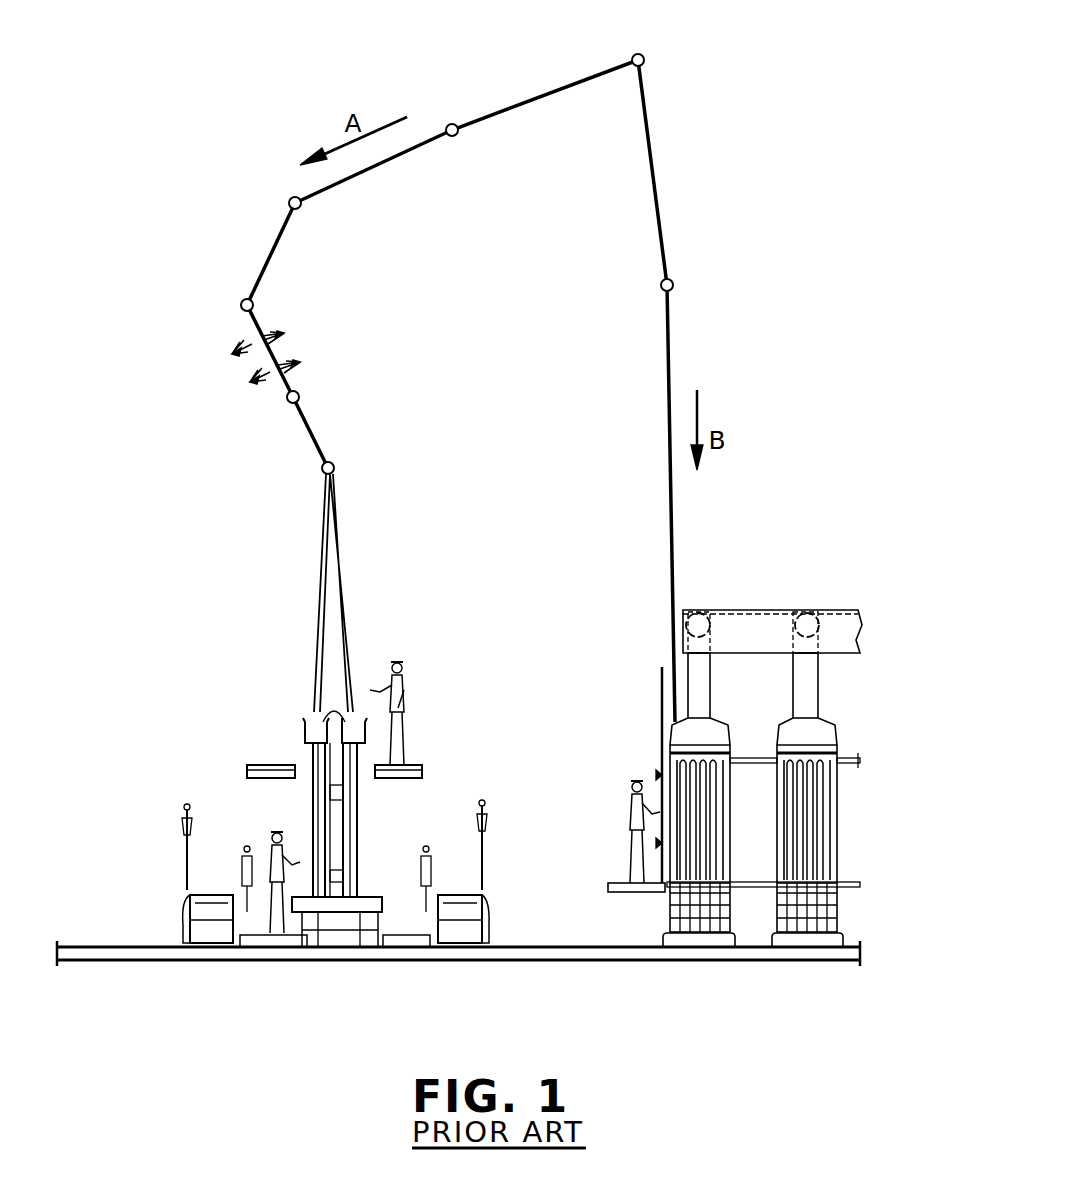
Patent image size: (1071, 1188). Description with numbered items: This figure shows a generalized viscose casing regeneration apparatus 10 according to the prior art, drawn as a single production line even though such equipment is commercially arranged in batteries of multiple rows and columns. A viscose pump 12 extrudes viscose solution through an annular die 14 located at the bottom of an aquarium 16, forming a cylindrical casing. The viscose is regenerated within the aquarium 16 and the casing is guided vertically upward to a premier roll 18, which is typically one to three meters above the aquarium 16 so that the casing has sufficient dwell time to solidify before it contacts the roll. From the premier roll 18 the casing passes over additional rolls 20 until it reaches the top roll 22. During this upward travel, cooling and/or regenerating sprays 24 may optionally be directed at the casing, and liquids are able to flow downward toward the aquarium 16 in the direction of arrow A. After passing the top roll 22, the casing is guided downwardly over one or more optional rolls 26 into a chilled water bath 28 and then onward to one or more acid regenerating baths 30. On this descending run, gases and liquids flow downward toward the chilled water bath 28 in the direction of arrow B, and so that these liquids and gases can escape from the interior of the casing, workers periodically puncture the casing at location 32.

The casing regeneration apparatus 10 is at (228, 562).
The viscose pump 12 is at (200, 893).
The annular die 14 is at (313, 941).
The aquarium 16 is at (313, 752).
The premier roll 18 is at (322, 469).
The additional rolls 20 is at (253, 303).
The top roll 22 is at (645, 57).
The cooling and/or regenerating sprays 24 is at (290, 328).
The optional rolls 26 is at (662, 288).
The chilled water bath 28 is at (682, 927).
The acid regenerating baths 30 is at (815, 927).
The puncture location 32 is at (652, 782).